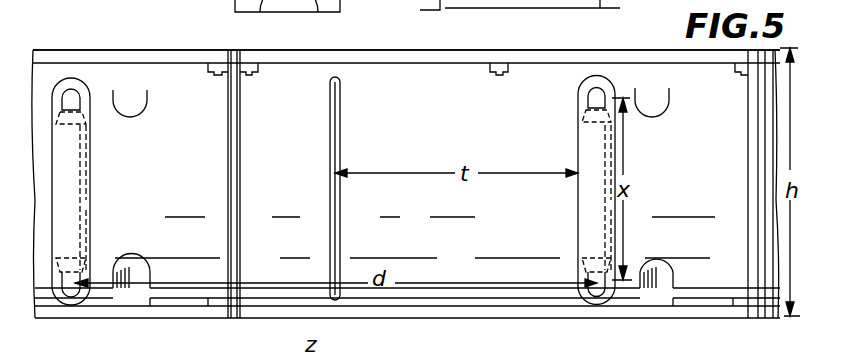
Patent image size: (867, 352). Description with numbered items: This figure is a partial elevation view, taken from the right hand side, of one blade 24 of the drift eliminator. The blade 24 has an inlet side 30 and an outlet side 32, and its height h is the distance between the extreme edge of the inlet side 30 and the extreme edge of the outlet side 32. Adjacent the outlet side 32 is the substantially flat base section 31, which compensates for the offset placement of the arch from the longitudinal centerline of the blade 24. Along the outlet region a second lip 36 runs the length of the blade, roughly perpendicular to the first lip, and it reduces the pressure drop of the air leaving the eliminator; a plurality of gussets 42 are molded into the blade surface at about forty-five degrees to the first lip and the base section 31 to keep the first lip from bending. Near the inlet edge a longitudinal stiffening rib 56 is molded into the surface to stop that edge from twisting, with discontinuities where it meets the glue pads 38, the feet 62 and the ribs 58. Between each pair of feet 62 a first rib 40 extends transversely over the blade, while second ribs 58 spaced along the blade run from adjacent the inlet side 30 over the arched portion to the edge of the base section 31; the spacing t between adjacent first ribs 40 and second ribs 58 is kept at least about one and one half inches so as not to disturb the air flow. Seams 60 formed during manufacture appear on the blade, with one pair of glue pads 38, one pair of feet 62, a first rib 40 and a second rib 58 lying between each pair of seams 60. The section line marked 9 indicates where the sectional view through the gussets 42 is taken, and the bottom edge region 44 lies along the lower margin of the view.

The section line 9- 9 is at (491, 33).
The blade 24 is at (525, 216).
The inlet side 30 is at (700, 318).
The base section 31 is at (188, 85).
The outlet side 32 is at (630, 48).
The second lip 36 is at (427, 58).
The glue pads 38 is at (130, 295).
The first ribs 40 is at (77, 197).
The gussets 42 is at (490, 70).
The bottom wall 44 is at (407, 335).
The longitudinal stiffening rib 56 is at (415, 300).
The second ribs 58 is at (338, 97).
The seams 60 is at (232, 50).
The feet 62 is at (72, 95).